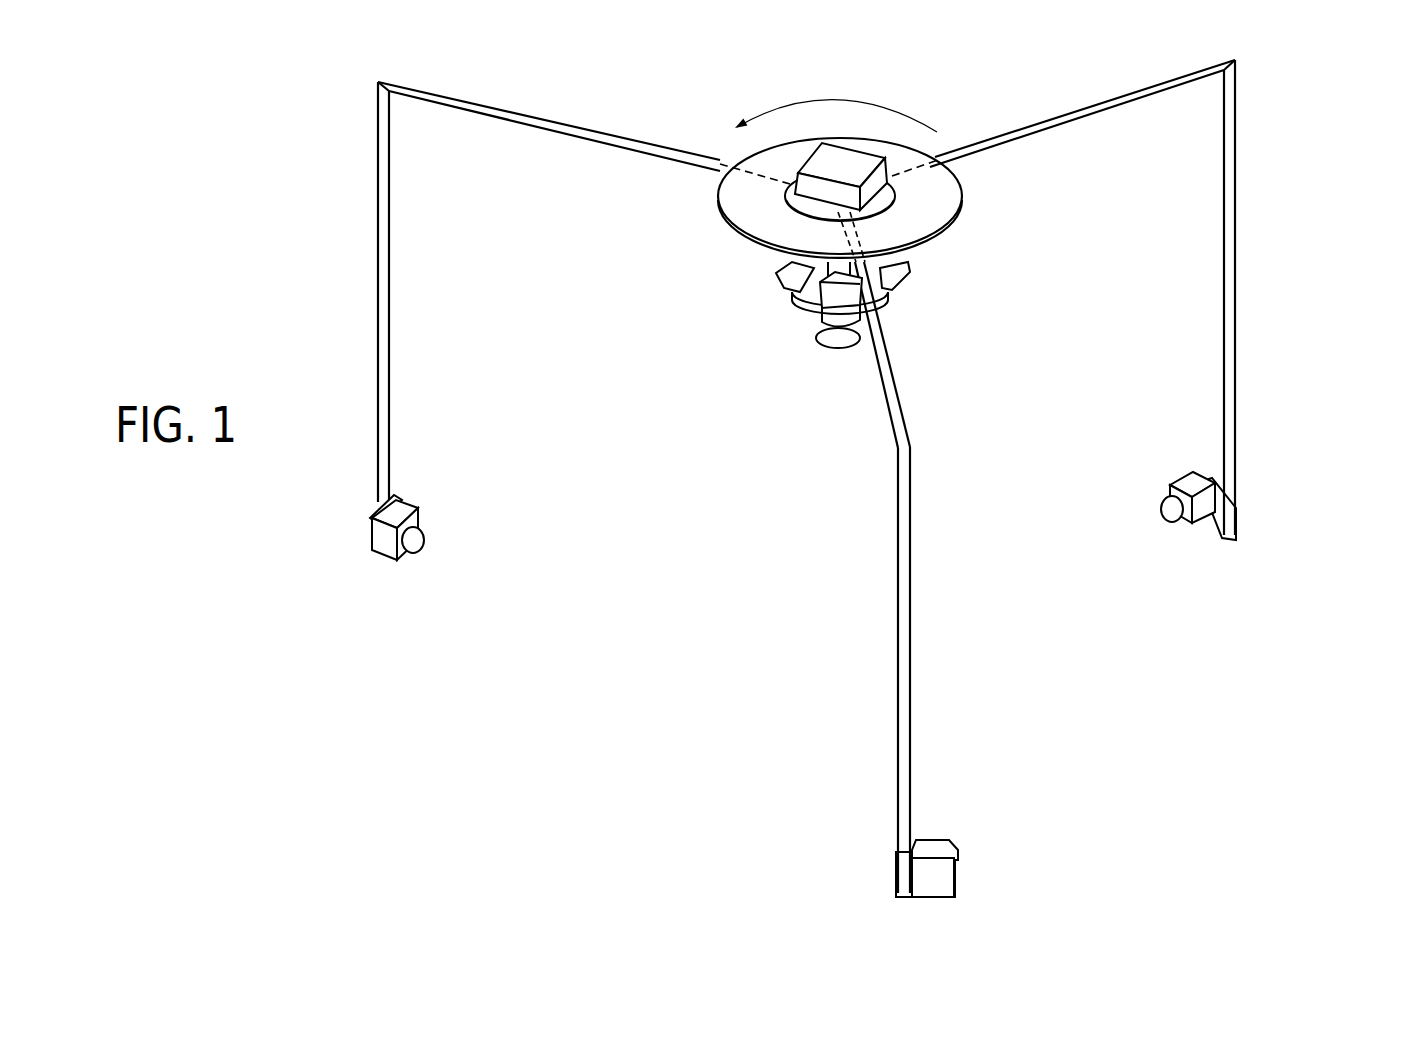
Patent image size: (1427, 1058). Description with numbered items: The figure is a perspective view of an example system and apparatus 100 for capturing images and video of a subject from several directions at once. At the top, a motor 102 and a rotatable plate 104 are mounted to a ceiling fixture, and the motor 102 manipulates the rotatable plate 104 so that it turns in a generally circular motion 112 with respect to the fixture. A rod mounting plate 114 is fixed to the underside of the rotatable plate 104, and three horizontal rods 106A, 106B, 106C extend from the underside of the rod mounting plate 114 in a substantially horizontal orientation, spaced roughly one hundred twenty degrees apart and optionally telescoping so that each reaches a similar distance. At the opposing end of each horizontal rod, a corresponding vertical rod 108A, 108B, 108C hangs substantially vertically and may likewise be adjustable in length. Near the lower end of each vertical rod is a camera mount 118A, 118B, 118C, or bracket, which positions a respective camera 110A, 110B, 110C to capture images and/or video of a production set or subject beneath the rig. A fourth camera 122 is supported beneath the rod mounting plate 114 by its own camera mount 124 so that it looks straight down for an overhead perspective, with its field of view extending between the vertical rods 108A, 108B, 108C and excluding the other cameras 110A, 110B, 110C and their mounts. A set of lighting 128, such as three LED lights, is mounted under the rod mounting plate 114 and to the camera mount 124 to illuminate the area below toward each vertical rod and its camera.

The system and apparatus 100 is at (1340, 153).
The motor 102 is at (841, 176).
The rotatable plate 104 is at (897, 200).
The horizontal rod 106A is at (1082, 113).
The horizontal rod 106B is at (906, 355).
The horizontal rod 106C is at (549, 126).
The vertical rod 108A is at (1264, 297).
The vertical rod 108B is at (941, 670).
The vertical rod 108C is at (417, 292).
The camera 110A is at (1196, 532).
The camera 110B is at (923, 902).
The camera 110C is at (388, 561).
The circular motion 112 is at (836, 103).
The rod mounting plate 114 is at (943, 192).
The camera mount 118A is at (1240, 512).
The camera mount 118B is at (928, 868).
The camera mount 118C is at (378, 510).
The fourth camera 122 is at (822, 337).
The camera mount 124 is at (790, 315).
The lighting 128 is at (810, 283).